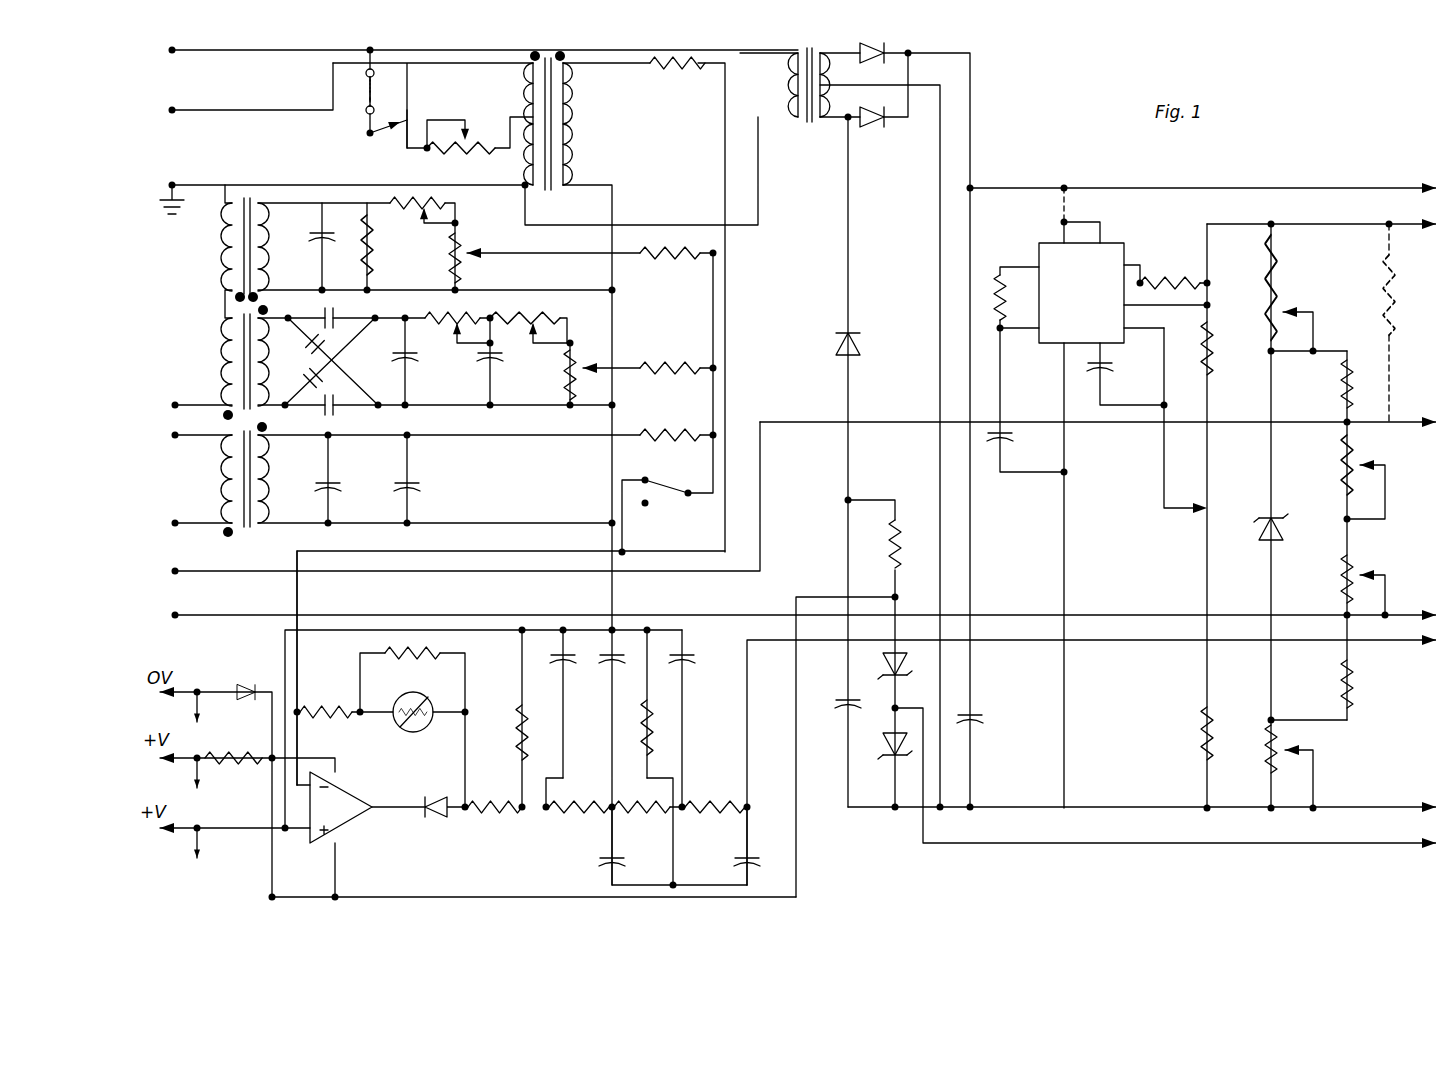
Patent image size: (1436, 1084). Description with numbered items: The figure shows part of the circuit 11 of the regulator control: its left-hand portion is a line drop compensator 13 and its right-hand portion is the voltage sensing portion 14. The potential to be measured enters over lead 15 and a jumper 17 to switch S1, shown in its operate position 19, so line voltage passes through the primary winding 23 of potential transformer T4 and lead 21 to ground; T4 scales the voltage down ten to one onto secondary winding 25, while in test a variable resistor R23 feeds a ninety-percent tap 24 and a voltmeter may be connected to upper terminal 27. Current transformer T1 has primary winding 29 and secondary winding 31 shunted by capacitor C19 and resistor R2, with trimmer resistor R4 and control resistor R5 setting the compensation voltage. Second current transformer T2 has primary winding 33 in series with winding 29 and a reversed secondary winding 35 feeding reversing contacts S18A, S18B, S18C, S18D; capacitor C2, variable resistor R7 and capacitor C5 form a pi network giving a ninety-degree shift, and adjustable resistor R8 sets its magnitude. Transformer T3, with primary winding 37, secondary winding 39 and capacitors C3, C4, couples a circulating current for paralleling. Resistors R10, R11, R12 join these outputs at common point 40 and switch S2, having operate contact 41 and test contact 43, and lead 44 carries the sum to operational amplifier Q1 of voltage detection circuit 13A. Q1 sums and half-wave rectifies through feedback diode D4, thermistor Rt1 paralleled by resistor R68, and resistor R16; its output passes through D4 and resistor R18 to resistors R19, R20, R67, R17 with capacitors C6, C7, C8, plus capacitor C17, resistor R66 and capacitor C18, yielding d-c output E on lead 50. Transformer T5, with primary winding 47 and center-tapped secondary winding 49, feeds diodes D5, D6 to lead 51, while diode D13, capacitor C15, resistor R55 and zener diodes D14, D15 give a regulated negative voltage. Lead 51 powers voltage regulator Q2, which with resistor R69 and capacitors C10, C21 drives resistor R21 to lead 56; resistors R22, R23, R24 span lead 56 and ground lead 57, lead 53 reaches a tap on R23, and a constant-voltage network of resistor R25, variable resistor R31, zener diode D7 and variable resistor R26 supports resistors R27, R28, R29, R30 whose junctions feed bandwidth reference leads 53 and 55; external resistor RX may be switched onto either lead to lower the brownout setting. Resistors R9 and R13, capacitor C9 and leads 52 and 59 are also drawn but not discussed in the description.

The circuit 11 is at (1027, 125).
The line drop compensator 13 is at (770, 384).
The voltage detection circuit 13A is at (273, 654).
The voltage sensing portion 14 is at (844, 388).
The lead 15 is at (312, 56).
The jumper 17 is at (357, 98).
The operate position 19 is at (407, 118).
The lead 21 is at (197, 183).
The primary winding 23 is at (530, 82).
The tap 24 is at (528, 114).
The secondary winding 25 is at (566, 100).
The upper terminal 27 is at (181, 112).
The primary winding 29 is at (228, 242).
The secondary winding 31 is at (263, 226).
The primary winding 33 is at (227, 356).
The secondary winding 35 is at (262, 386).
The primary winding 37 is at (230, 488).
The secondary winding 39 is at (264, 484).
The common point 40 is at (715, 446).
The operate contact 41 is at (647, 476).
The test contact 43 is at (645, 504).
The lead 44 is at (536, 552).
The primary winding 47 is at (796, 86).
The center tapped secondary winding 49 is at (858, 63).
The lead 50 is at (766, 642).
The lead 51 is at (1018, 186).
The conductor 52 is at (792, 688).
The lead 53 is at (1166, 346).
The lead 55 is at (1400, 614).
The lead 56 is at (1344, 224).
The ground lead 57 is at (1352, 806).
The output line 59 is at (1346, 844).
The switch S1 is at (369, 138).
The switch S2 is at (672, 494).
The switch contact S18A is at (333, 314).
The switch contact S18B is at (338, 352).
The switch contact S18C is at (336, 380).
The switch contact S18D is at (336, 414).
The current transformer T1 is at (245, 242).
The second current transformer T2 is at (245, 362).
The transformer T3 is at (245, 484).
The potential transformer T4 is at (548, 129).
The transformer T5 is at (785, 95).
The resistor R2 is at (376, 240).
The trimmer resistor R4 is at (444, 196).
The control resistor R5 is at (468, 254).
The variable resistor R7 is at (449, 314).
The adjustable resistor R8 is at (534, 314).
The potentiometer R9 is at (582, 360).
The resistor R10 is at (642, 260).
The resistor R11 is at (644, 376).
The resistor R12 is at (690, 430).
The resistor R13 is at (662, 72).
The feedback resistor R16 is at (345, 706).
The resistor R17 is at (510, 722).
The resistor R18 is at (484, 814).
The resistor R19 is at (571, 800).
The resistor R20 is at (622, 814).
The series resistor R21 is at (1190, 276).
The resistor R22 is at (1222, 338).
The variable resistor R23 is at (436, 166).
The resistor R24 is at (1220, 730).
The resistor R25 is at (1282, 254).
The variable resistor R26 is at (1258, 772).
The resistor R27 is at (1342, 382).
The variable resistor R28 is at (1360, 458).
The resistor R29 is at (1334, 574).
The resistor R30 is at (1362, 696).
The variable resistor R31 is at (1282, 310).
The resistor R55 is at (904, 536).
The resistor R66 is at (652, 722).
The resistor R67 is at (730, 786).
The resistor R68 is at (425, 648).
The resistor R69 is at (988, 282).
The external resistor RX is at (1374, 296).
The thermistor Rt1 is at (428, 700).
The capacitor C2 is at (432, 358).
The capacitor C3 is at (348, 490).
The capacitor C4 is at (424, 490).
The capacitor C5 is at (506, 358).
The capacitor C6 is at (554, 662).
The capacitor C7 is at (602, 662).
The capacitor C8 is at (714, 672).
The capacitor C9 is at (994, 716).
The capacitor C10 is at (1136, 376).
The capacitor C15 is at (836, 706).
The capacitor C17 is at (596, 864).
The capacitor C18 is at (732, 868).
The capacitor C19 is at (312, 236).
The capacitor C21 is at (1034, 440).
The diode D4 is at (444, 818).
The diode D5 is at (862, 46).
The diode D6 is at (878, 127).
The zener diode D7 is at (1286, 530).
The diode D13 is at (860, 340).
The zener diode D14 is at (910, 668).
The zener diode D15 is at (882, 758).
The operational amplifier Q1 is at (344, 788).
The voltage regulator Q2 is at (1116, 243).
The output E is at (1078, 642).